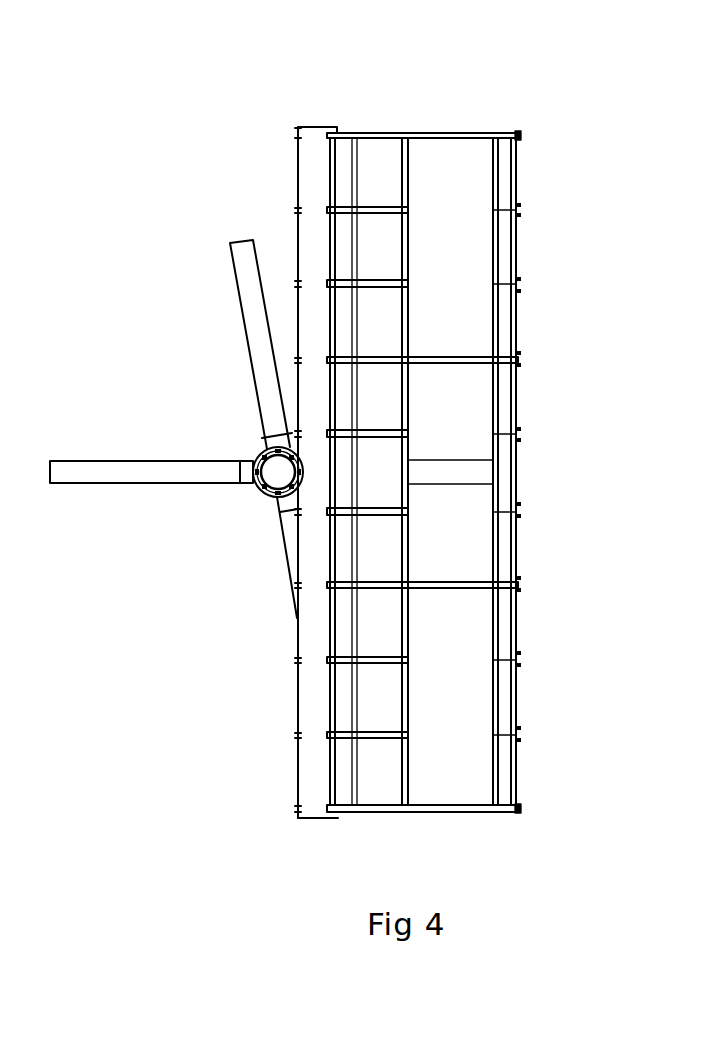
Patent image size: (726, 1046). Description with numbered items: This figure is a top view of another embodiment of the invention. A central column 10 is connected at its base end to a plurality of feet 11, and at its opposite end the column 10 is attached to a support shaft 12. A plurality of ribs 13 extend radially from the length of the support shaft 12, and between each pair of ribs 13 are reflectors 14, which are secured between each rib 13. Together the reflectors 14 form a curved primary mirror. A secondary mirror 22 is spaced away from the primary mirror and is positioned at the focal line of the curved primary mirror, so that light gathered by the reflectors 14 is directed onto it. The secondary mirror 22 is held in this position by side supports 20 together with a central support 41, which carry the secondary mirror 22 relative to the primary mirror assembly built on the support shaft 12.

The central column 10 is at (277, 473).
The feet 11 is at (245, 263).
The support shaft 12 is at (318, 763).
The ribs 13 is at (340, 208).
The reflectors 14 is at (373, 615).
The side supports 20 is at (460, 132).
The secondary mirror 22 is at (495, 299).
The central support 41 is at (488, 472).